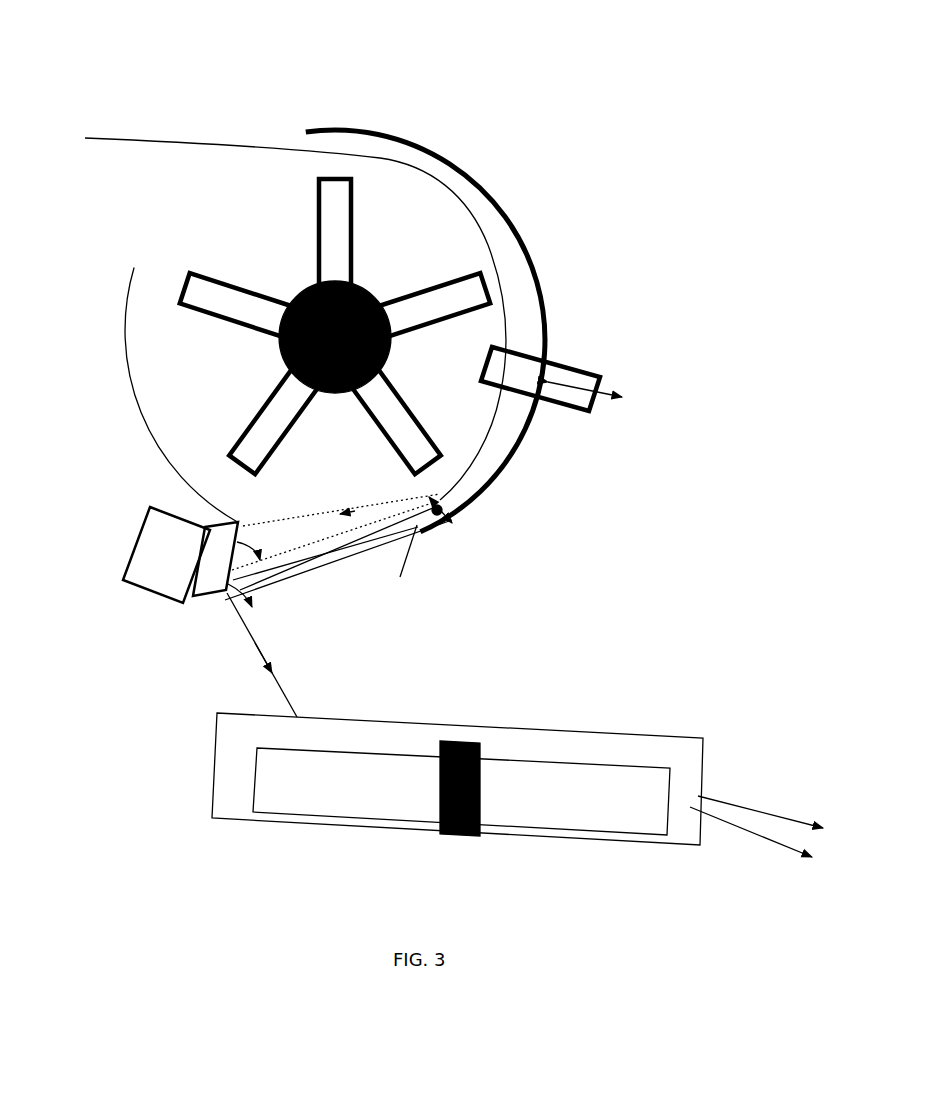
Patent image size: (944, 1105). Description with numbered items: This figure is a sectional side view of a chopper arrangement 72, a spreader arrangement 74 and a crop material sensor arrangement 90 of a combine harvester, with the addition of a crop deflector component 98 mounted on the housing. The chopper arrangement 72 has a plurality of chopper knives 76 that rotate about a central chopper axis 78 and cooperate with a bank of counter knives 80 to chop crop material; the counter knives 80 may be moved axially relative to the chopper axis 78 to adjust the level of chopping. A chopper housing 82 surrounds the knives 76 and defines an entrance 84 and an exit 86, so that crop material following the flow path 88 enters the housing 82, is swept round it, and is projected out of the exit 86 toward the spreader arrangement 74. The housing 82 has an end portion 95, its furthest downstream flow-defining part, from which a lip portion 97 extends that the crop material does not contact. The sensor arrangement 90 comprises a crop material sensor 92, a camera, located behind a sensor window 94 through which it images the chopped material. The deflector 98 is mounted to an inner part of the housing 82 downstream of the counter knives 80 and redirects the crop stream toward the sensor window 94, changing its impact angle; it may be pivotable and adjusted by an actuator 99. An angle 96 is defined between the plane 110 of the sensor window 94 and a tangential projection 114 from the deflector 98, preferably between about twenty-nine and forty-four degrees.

The chopper arrangement 72 is at (616, 214).
The spreader arrangement 74 is at (372, 845).
The chopper blades or knives 76 is at (257, 405).
The central chopper axis 78 is at (278, 347).
The counter knives 80 is at (570, 410).
The chopper housing 82 is at (447, 162).
The entrance 84 is at (188, 208).
The exit 86 is at (310, 580).
The flow path 88 is at (240, 140).
The crop material sensor arrangement 90 is at (130, 612).
The crop material sensor 92 is at (130, 553).
The sensor window 94 is at (205, 600).
The end portion 95 is at (418, 540).
The angle 96 is at (250, 593).
The lip portion 97 is at (405, 560).
The crop deflector component 98 is at (440, 525).
The actuator 99 is at (468, 500).
The plane 110 is at (233, 603).
The tangential projection 114 is at (325, 532).